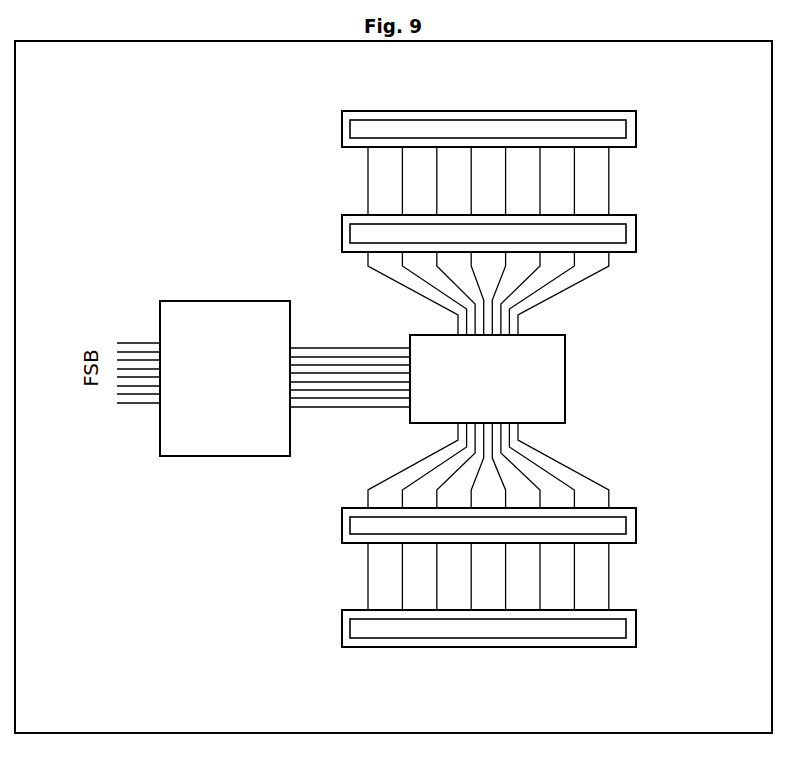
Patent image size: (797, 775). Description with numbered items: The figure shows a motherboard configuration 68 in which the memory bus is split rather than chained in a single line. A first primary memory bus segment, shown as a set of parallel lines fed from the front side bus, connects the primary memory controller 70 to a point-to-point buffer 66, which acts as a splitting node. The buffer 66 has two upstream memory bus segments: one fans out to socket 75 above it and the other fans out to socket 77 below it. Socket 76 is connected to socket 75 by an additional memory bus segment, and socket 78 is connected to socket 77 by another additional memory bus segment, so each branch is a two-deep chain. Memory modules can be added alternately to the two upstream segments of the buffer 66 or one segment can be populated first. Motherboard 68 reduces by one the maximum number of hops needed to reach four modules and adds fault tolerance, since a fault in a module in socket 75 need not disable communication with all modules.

The motherboard configuration 68 is at (70, 689).
The primary memory controller 70 is at (212, 421).
The point-to-point buffer 66 is at (475, 411).
The socket 75 is at (340, 232).
The socket 76 is at (340, 127).
The socket 77 is at (340, 522).
The socket 78 is at (340, 625).